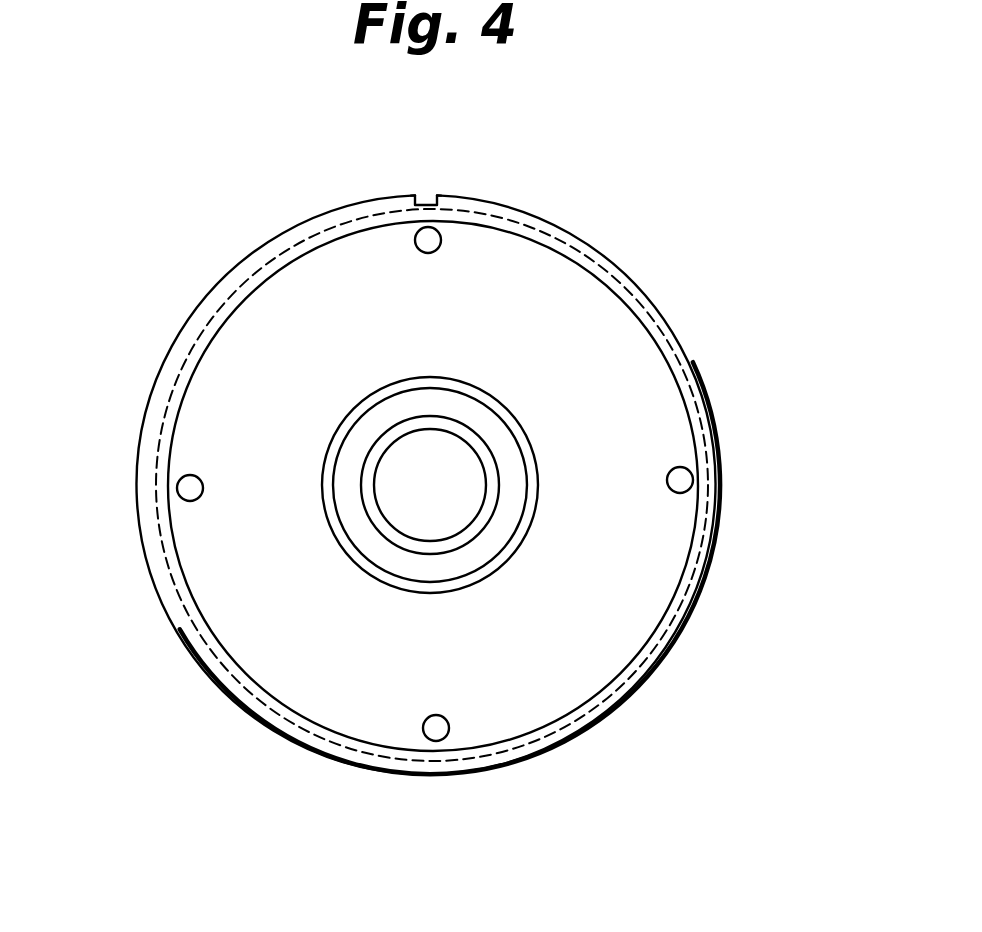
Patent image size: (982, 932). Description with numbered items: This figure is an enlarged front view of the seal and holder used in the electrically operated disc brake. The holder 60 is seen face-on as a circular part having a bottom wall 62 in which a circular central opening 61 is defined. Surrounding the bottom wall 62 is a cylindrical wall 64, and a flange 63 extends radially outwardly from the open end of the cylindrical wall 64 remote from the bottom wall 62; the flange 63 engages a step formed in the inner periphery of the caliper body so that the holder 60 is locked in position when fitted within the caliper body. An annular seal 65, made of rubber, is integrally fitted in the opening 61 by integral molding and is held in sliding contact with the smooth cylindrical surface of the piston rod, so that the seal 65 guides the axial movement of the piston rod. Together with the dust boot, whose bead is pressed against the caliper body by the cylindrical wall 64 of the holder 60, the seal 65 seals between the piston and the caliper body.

The holder 60 is at (596, 236).
The circular central opening 61 is at (368, 498).
The bottom wall 62 is at (265, 334).
The flange 63 is at (667, 658).
The cylindrical wall 64 is at (717, 423).
The annular seal 65 is at (380, 450).